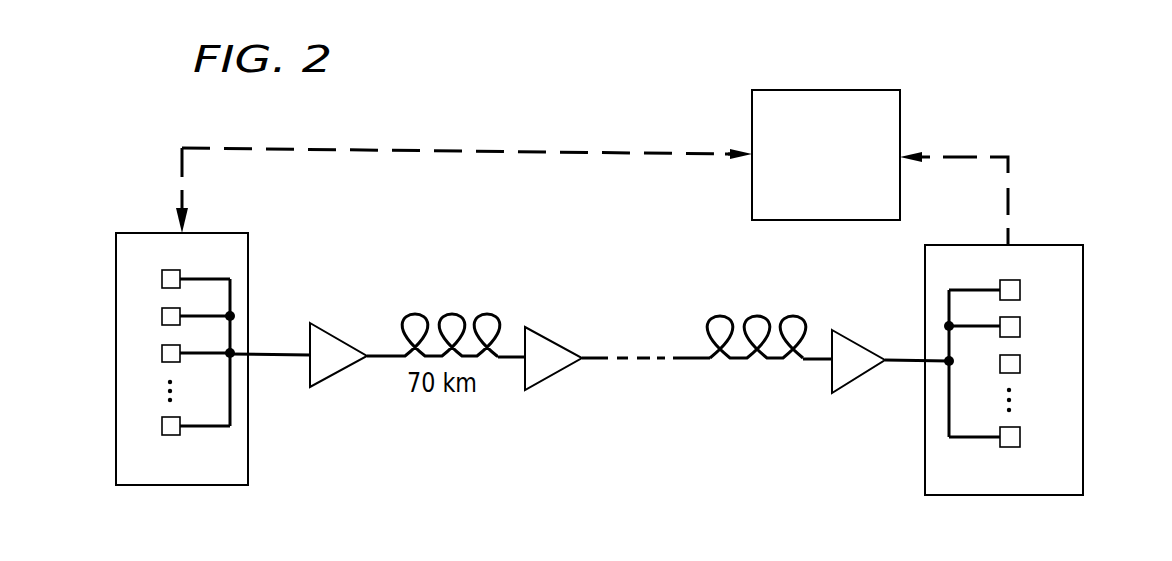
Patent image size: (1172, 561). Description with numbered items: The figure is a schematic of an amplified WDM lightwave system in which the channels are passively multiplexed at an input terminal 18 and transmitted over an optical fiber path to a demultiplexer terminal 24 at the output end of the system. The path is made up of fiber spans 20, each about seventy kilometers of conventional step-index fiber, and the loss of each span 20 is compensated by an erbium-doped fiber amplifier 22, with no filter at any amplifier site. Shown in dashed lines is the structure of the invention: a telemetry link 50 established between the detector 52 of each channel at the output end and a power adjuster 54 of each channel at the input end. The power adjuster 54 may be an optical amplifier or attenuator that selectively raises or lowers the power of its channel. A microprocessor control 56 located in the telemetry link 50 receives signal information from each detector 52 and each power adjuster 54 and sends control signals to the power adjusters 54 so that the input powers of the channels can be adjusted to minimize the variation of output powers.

The multiplexer terminal 18 is at (248, 235).
The fiber span 20 is at (453, 312).
The erbium-doped fiber amplifier 22 is at (335, 333).
The demultiplexer terminal 24 is at (1083, 246).
The telemetry link 50 is at (530, 148).
The detector 52 is at (1020, 284).
The power adjuster 54 is at (181, 271).
The microprocessor control 56 is at (826, 96).